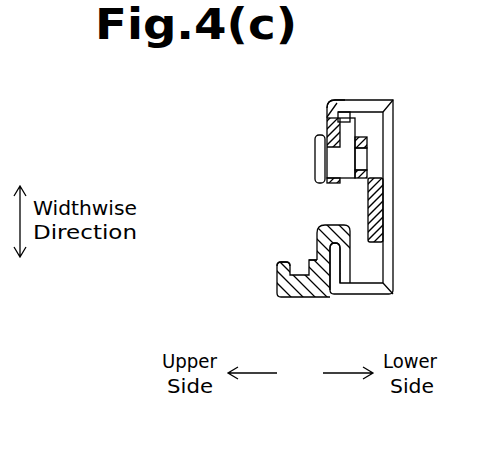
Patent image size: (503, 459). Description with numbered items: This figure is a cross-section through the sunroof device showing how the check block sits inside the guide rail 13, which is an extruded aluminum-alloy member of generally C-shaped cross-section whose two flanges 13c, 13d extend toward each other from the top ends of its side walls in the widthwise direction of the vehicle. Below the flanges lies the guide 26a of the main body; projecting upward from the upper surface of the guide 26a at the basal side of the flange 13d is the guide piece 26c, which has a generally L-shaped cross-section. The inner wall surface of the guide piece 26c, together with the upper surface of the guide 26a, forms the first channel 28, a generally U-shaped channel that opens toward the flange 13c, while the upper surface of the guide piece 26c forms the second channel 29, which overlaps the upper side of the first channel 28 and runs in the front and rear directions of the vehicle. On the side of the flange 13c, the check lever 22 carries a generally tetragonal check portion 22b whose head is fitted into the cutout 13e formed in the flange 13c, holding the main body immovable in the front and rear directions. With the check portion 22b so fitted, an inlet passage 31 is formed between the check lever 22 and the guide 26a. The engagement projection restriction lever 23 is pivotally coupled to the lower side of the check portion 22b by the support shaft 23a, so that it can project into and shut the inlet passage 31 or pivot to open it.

The guide rail 13 is at (396, 127).
The flange 13c is at (327, 101).
The flange 13d is at (336, 268).
The cutout 13e is at (347, 122).
The check lever 22 is at (378, 216).
The check portion 22b is at (327, 138).
The engagement projection restriction lever 23 is at (370, 177).
The support shaft 23a is at (367, 140).
The guide 26a is at (320, 285).
The guide piece 26c is at (278, 285).
The first channel 28 is at (290, 264).
The second channel 29 is at (277, 268).
The inlet passage 31 is at (340, 190).